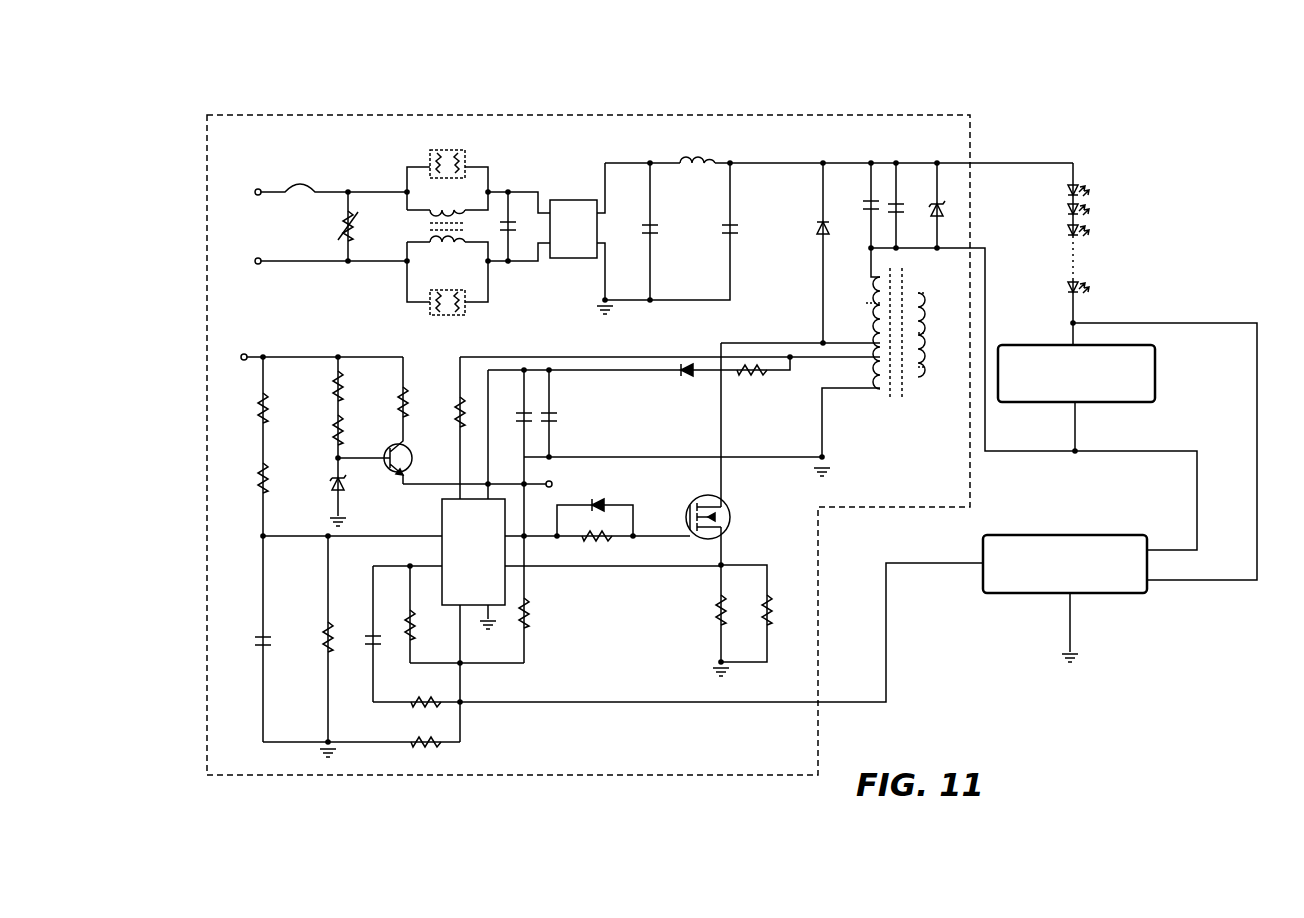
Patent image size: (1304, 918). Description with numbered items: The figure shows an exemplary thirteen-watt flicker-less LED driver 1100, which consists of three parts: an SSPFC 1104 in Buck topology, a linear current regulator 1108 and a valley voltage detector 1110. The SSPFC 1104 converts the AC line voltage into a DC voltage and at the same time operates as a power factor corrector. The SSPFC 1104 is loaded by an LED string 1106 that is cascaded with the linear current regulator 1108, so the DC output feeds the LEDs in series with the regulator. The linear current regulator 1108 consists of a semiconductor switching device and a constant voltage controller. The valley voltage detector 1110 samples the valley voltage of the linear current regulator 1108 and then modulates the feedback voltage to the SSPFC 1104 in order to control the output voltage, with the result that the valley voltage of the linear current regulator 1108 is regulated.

The flicker-less LED driver 1100 is at (511, 98).
The SSPFC 1104 is at (365, 113).
The LED string 1106 is at (1095, 188).
The linear current regulator 1108 is at (1122, 345).
The valley voltage detector 1110 is at (1000, 593).